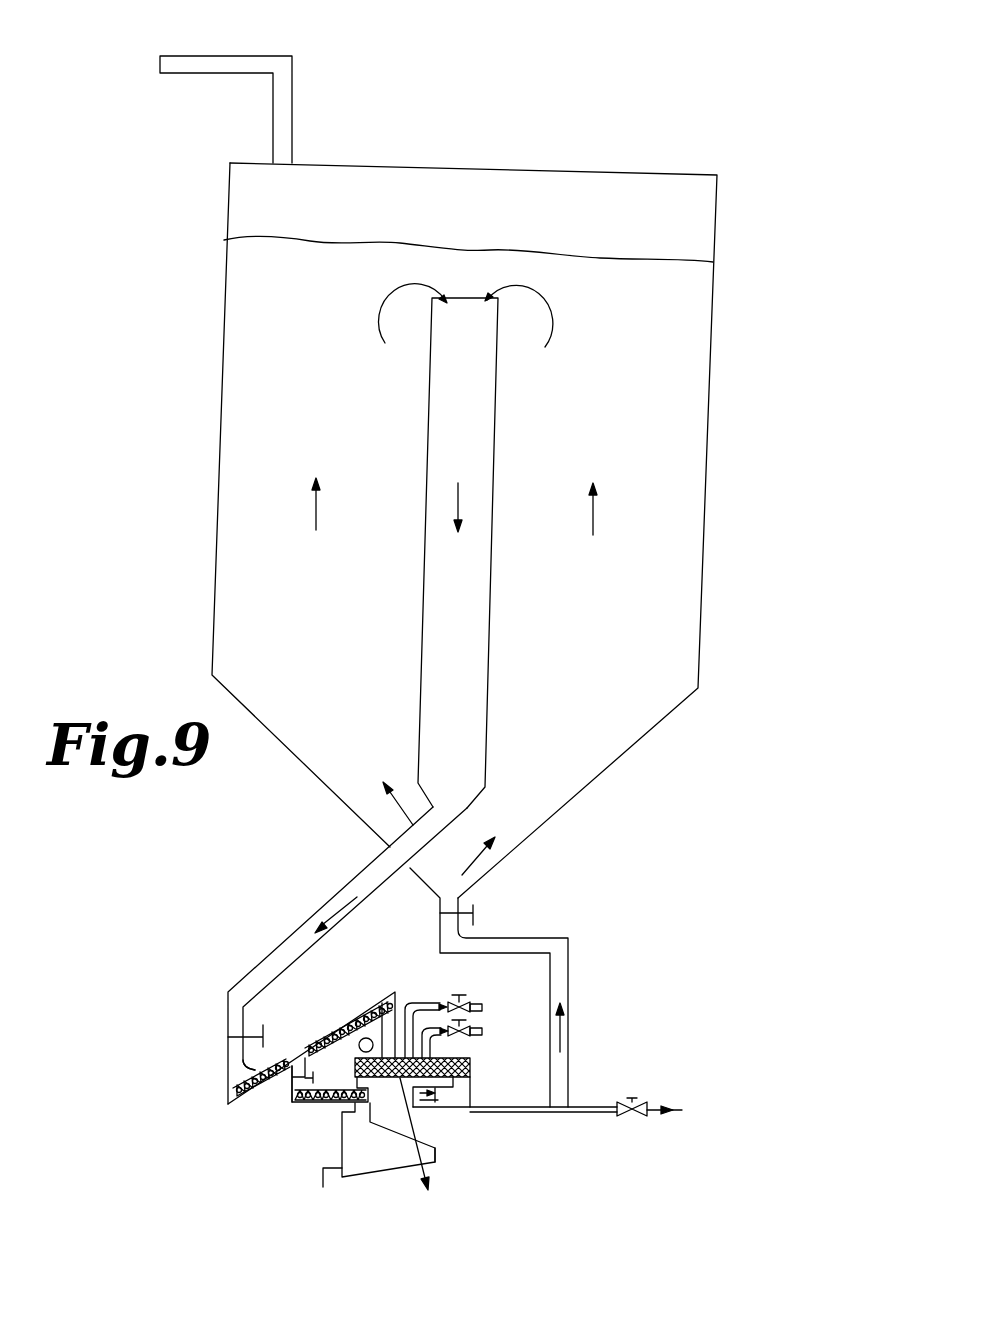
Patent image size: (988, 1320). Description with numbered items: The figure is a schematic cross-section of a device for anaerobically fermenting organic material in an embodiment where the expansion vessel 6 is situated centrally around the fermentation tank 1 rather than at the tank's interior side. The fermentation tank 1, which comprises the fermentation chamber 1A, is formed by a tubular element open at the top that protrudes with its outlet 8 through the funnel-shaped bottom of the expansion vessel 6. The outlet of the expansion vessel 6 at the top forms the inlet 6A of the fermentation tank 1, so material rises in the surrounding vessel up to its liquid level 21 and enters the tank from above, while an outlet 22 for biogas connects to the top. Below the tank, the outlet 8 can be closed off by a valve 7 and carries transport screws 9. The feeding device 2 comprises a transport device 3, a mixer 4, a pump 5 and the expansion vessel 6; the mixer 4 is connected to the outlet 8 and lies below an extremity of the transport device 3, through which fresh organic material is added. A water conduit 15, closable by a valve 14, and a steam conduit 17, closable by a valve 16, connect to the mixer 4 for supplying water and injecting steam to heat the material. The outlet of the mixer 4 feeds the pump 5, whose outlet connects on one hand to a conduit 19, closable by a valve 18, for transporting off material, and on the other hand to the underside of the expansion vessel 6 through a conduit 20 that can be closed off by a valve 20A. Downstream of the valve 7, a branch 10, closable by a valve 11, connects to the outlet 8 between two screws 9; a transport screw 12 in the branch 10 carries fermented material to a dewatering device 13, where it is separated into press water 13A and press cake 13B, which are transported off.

The fermentation tank 1 is at (504, 691).
The fermentation chamber 1A is at (467, 640).
The feeding device 2 is at (486, 1084).
The transport device 3 is at (347, 1013).
The mixer 4 is at (432, 1157).
The pump 5 is at (458, 1107).
The expansion vessel 6 is at (724, 361).
The inlet 6A is at (468, 303).
The valve 7 is at (253, 1023).
The outlet 8 is at (209, 1023).
The transport screws 9 is at (330, 1027).
The branch 10 is at (287, 1083).
The valve 11 is at (320, 1069).
The transport screw 12 is at (318, 1105).
The dewatering device 13 is at (387, 1152).
The press water 13A is at (322, 1172).
The press cake 13B is at (437, 1168).
The valve 14 is at (466, 997).
The water conduit 15 is at (420, 1003).
The valve 16 is at (468, 1025).
The steam conduit 17 is at (432, 1038).
The valve 18 is at (642, 1093).
The conduit 19 is at (657, 1113).
The conduit 20 is at (572, 993).
The valve 20A is at (462, 907).
The liquid level 21 is at (487, 247).
The outlet for biogas 22 is at (197, 66).